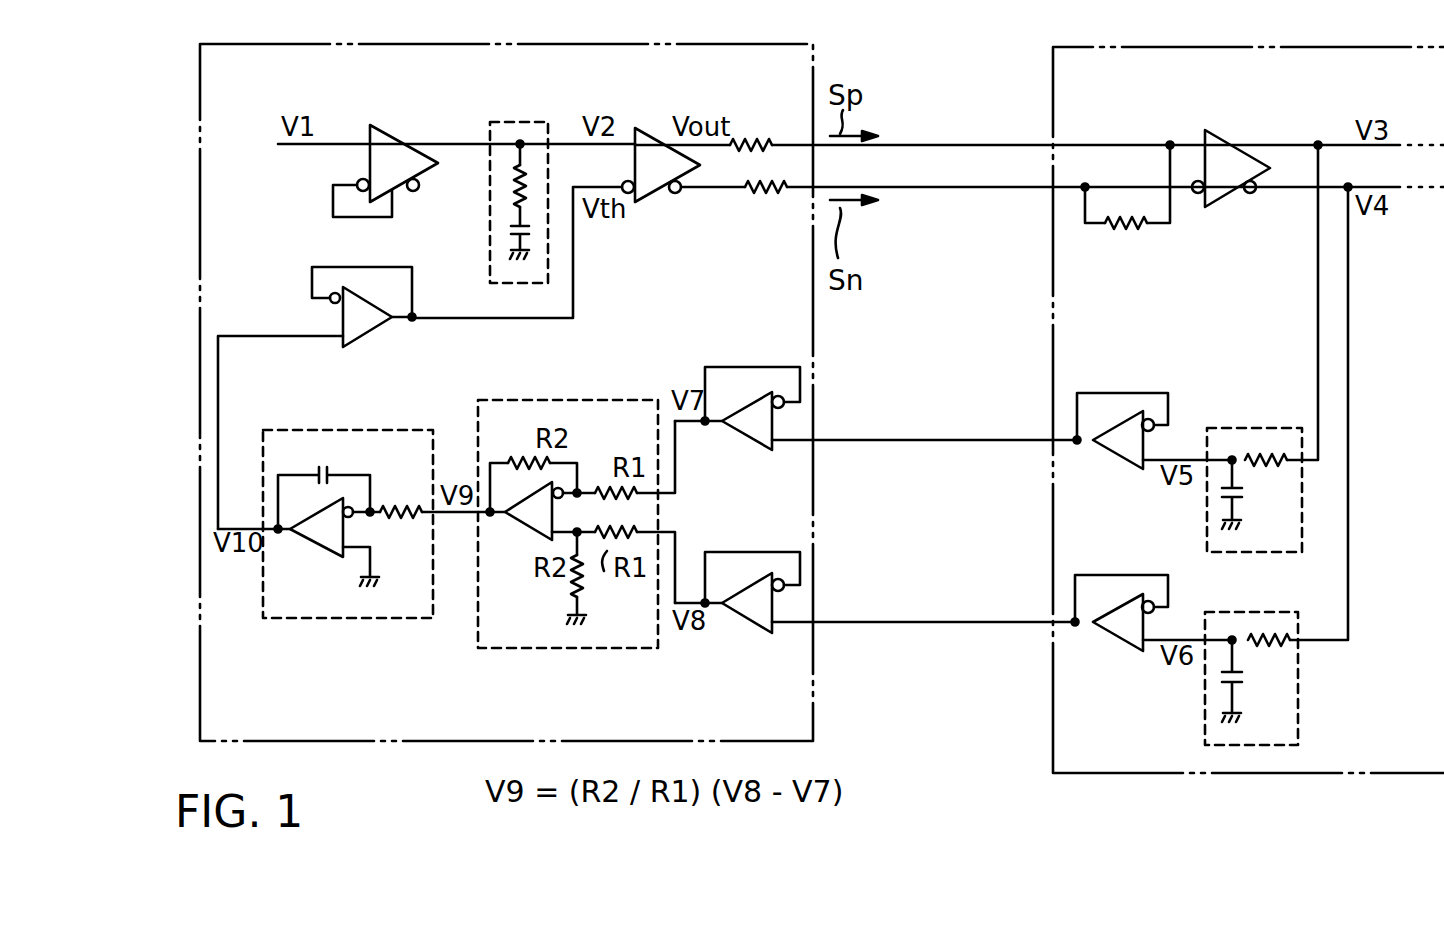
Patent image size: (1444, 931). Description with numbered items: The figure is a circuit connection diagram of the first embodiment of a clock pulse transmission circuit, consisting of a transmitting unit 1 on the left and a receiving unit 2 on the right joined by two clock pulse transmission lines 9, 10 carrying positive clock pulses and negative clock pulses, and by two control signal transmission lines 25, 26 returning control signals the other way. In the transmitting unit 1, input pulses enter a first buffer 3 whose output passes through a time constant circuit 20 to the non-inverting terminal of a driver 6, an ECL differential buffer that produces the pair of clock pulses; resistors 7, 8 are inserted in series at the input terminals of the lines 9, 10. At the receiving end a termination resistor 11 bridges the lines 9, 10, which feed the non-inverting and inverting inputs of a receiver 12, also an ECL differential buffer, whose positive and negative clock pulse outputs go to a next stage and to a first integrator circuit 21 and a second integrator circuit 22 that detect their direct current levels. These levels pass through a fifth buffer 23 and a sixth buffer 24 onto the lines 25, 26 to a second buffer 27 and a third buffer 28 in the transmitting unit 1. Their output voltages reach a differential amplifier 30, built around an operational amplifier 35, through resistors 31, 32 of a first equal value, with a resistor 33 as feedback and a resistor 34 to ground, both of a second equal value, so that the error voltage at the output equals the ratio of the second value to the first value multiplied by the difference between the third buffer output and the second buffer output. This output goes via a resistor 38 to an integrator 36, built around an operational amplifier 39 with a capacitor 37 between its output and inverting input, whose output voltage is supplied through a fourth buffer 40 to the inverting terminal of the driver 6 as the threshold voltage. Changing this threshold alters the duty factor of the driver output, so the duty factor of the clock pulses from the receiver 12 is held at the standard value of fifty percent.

The transmitting unit 1 is at (318, 44).
The receiving unit 2 is at (1100, 47).
The first buffer 3 is at (387, 126).
The driver 6 is at (653, 203).
The resistor 7 is at (736, 158).
The resistor 8 is at (769, 199).
The clock pulse transmission line 9 is at (938, 147).
The clock pulse transmission line 10 is at (997, 189).
The termination resistor 11 is at (1128, 232).
The receiver 12 is at (1235, 131).
The time constant circuit 20 is at (511, 121).
The first integrator circuit 21 is at (1232, 428).
The second integrator circuit 22 is at (1298, 681).
The fifth buffer 23 is at (1106, 455).
The sixth buffer 24 is at (1113, 636).
The control signal transmission line 25 is at (868, 442).
The control signal transmission line 26 is at (867, 618).
The second buffer 27 is at (735, 439).
The third buffer 28 is at (746, 637).
The differential amplifier 30 is at (498, 649).
The resistor 31 is at (604, 484).
The resistor 32 is at (635, 572).
The resistor 33 is at (522, 447).
The resistor 34 is at (565, 590).
The operational amplifier 35 is at (525, 529).
The integrator 36 is at (285, 619).
The capacitor 37 is at (330, 465).
The resistor 38 is at (403, 521).
The operational amplifier 39 is at (312, 541).
The fourth buffer 40 is at (368, 333).